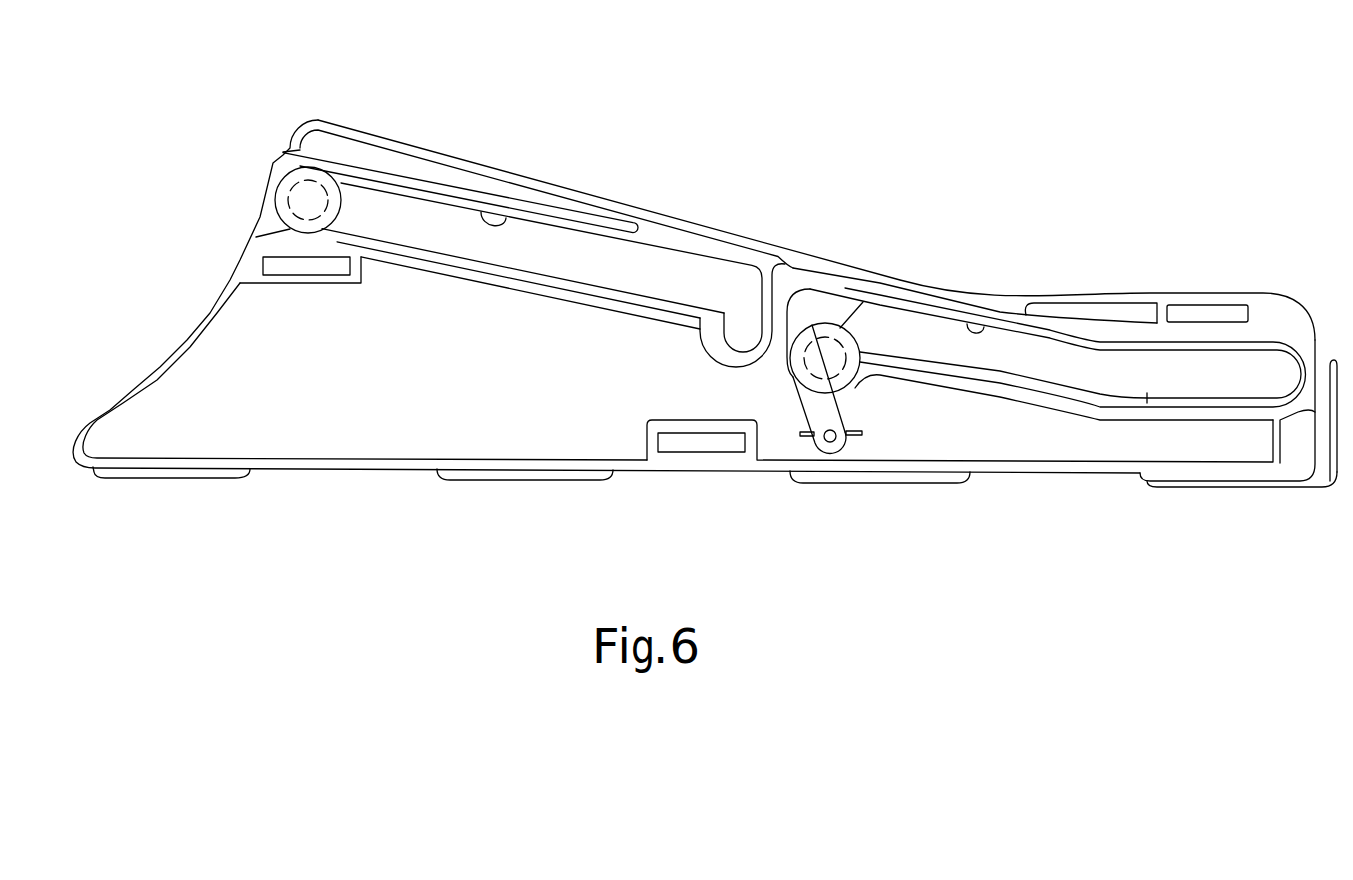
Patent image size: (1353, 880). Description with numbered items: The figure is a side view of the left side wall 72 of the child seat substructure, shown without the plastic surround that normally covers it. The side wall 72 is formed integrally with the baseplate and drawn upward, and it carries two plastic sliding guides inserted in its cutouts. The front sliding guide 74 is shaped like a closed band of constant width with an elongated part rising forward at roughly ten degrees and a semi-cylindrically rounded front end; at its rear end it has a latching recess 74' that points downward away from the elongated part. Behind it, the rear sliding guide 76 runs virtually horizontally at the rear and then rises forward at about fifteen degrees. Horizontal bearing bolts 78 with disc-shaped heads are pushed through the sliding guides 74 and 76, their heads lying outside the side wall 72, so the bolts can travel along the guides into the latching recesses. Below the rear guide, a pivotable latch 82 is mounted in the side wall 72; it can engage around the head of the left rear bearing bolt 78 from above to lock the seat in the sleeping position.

The side wall 72 is at (335, 403).
The front sliding guide 74 is at (799, 203).
The latching recess 74' is at (590, 254).
The rear sliding guide 76 is at (987, 327).
The bearing bolt 78 is at (313, 195).
The latch 82 is at (818, 415).